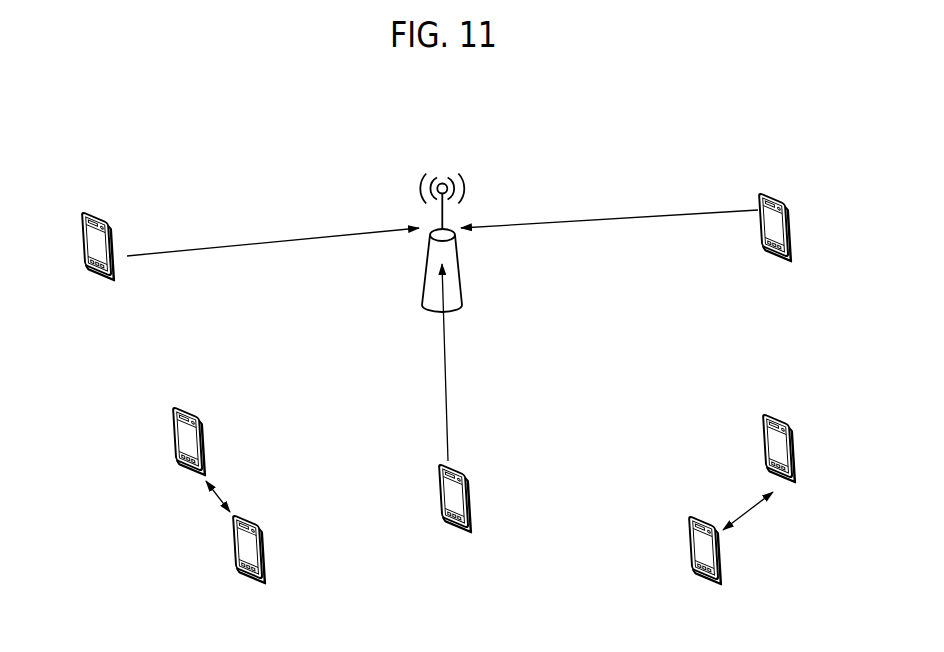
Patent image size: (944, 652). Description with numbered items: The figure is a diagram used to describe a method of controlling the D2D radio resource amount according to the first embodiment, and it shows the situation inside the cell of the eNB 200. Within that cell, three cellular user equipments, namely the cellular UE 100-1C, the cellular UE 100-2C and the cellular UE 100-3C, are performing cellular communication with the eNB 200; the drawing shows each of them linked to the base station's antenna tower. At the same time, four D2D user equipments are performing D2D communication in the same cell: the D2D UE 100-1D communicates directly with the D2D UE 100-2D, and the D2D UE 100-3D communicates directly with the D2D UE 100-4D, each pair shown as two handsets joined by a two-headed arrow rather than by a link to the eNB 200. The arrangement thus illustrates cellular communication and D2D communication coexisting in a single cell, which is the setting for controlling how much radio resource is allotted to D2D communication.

The eNB 200 is at (442, 226).
The cellular UE 100-1C is at (97, 265).
The cellular UE 100-2C is at (465, 518).
The cellular UE 100-3C is at (789, 245).
The D2D UE 100-1D is at (176, 423).
The D2D UE 100-2D is at (245, 565).
The D2D UE 100-3D is at (775, 433).
The D2D UE 100-4D is at (703, 569).